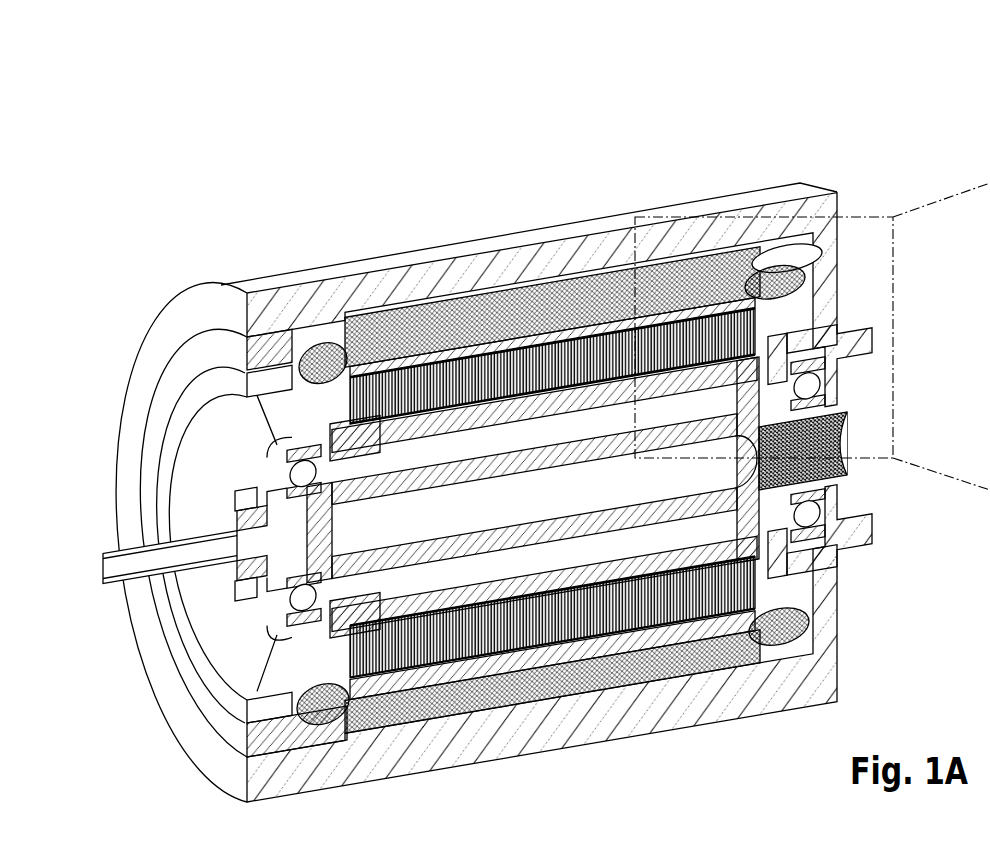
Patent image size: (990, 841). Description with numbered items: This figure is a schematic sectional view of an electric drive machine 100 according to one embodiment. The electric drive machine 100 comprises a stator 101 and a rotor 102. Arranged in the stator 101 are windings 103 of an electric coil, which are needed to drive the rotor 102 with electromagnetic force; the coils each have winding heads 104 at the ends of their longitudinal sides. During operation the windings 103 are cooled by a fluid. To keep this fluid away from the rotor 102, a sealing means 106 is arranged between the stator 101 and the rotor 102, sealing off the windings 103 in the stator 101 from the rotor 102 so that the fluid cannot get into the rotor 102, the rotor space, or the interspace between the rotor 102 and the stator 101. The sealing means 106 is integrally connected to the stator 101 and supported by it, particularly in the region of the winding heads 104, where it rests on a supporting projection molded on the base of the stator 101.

The electric drive machine 100 is at (410, 137).
The stator 101 is at (697, 188).
The rotor 102 is at (876, 494).
The windings 103 is at (548, 322).
The winding heads 104 is at (323, 372).
The sealing means 106 is at (282, 357).